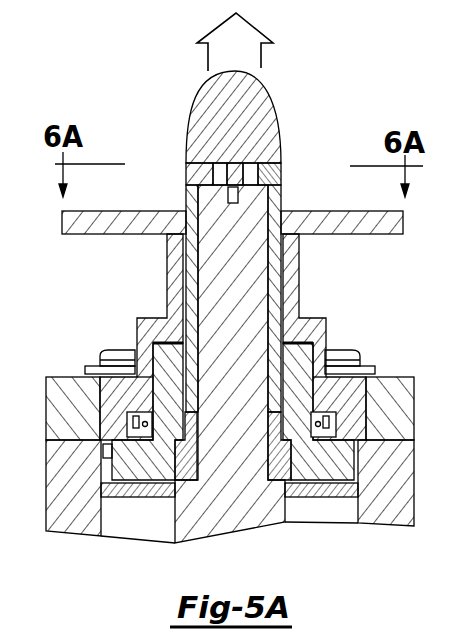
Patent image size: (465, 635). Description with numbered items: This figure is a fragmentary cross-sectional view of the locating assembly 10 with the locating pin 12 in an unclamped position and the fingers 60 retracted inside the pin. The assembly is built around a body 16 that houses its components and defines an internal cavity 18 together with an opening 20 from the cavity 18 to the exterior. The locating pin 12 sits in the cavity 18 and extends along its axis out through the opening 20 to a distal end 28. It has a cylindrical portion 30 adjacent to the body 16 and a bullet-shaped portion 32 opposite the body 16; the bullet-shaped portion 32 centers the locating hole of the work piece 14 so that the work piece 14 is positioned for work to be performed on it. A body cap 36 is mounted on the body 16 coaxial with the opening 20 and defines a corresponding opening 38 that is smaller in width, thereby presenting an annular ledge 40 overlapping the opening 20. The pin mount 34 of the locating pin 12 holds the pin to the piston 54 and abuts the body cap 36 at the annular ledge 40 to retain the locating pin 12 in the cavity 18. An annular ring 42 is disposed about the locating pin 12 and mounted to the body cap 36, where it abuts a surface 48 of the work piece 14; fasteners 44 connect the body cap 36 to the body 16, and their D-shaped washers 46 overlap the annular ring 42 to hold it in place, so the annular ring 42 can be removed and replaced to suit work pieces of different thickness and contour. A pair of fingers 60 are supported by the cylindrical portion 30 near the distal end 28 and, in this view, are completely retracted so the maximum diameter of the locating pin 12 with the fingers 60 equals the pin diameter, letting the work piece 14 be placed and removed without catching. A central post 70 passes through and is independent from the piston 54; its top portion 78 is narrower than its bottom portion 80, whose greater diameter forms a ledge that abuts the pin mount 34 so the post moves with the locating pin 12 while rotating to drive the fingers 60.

The locating assembly 10 is at (120, 109).
The locating pin 12 is at (246, 219).
The work piece 14 is at (93, 210).
The body 16 is at (45, 513).
The internal cavity 18 is at (108, 498).
The opening 20 is at (100, 453).
The distal end 28 is at (250, 93).
The cylindrical portion 30 is at (274, 300).
The bullet-shaped portion 32 is at (247, 140).
The pin mount 34 is at (352, 460).
The body cap 36 is at (398, 395).
The corresponding opening 38 is at (147, 422).
The annular ledge 40 is at (332, 436).
The annular ring 42 is at (172, 265).
The fasteners 44 is at (118, 350).
The D-shaped washers 46 is at (92, 358).
The surface 48 is at (78, 234).
The piston 54 is at (312, 490).
The fingers 60 is at (186, 173).
The central post 70 is at (233, 444).
The top portion 78 is at (238, 257).
The bottom portion 80 is at (205, 513).